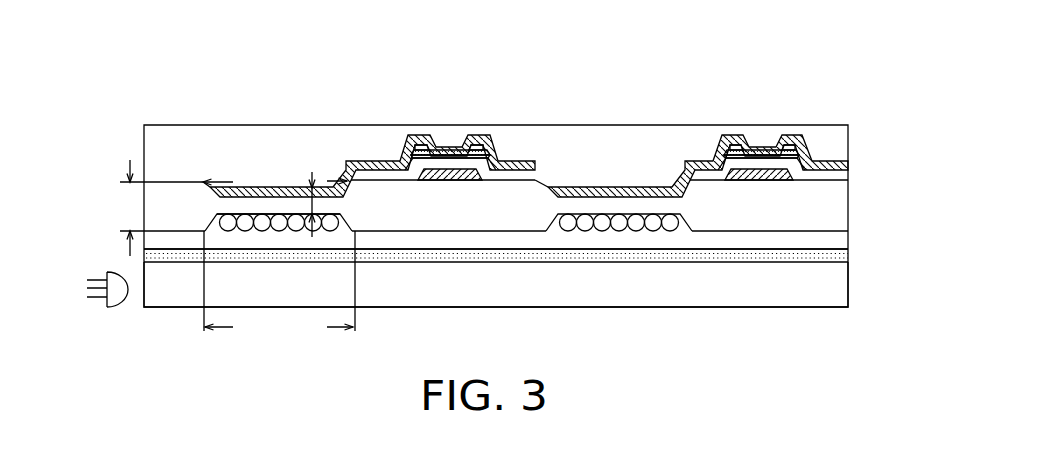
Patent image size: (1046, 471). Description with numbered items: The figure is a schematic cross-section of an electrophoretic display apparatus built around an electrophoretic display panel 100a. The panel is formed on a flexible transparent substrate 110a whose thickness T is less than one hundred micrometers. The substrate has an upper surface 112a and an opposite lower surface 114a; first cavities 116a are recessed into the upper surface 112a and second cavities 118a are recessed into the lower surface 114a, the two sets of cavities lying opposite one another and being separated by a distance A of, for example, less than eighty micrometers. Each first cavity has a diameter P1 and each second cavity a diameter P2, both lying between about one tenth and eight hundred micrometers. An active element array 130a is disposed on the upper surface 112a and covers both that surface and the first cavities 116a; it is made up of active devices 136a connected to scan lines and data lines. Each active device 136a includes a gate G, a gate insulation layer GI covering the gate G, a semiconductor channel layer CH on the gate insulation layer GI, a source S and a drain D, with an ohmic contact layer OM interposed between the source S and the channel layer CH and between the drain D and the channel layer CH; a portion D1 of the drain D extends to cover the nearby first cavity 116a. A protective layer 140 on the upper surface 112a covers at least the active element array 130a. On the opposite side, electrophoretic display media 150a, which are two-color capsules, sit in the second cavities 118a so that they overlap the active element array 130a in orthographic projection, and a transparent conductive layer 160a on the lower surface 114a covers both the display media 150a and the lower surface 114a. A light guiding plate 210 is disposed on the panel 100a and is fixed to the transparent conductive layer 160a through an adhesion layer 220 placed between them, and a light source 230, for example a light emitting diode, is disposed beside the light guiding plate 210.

The electrophoretic display panel 100a is at (793, 326).
The transparent substrate 110a is at (833, 200).
The upper surface 112a is at (561, 164).
The lower surface 114a is at (794, 235).
The first cavities 116a is at (548, 180).
The second cavities 118a is at (549, 221).
The active element array 130a is at (456, 90).
The active devices 136a is at (567, 50).
The protective layer 140 is at (681, 142).
The electrophoretic display media 150a is at (669, 229).
The transparent conductive layer 160a is at (431, 242).
The light guiding plate 210 is at (840, 295).
The adhesion layer 220 is at (836, 252).
The light source 230 is at (114, 308).
The drain D is at (393, 143).
The source S is at (497, 148).
The gate G is at (443, 172).
The gate insulation layer GI is at (453, 162).
The semiconductor channel layer CH is at (432, 150).
The ohmic contact layer OM is at (482, 138).
The portion of the drain D1 is at (618, 192).
The diameter of the first cavity P1 is at (275, 200).
The diameter of the second cavity P2 is at (279, 288).
The thickness of the transparent substrate T is at (132, 208).
The distance A is at (303, 205).